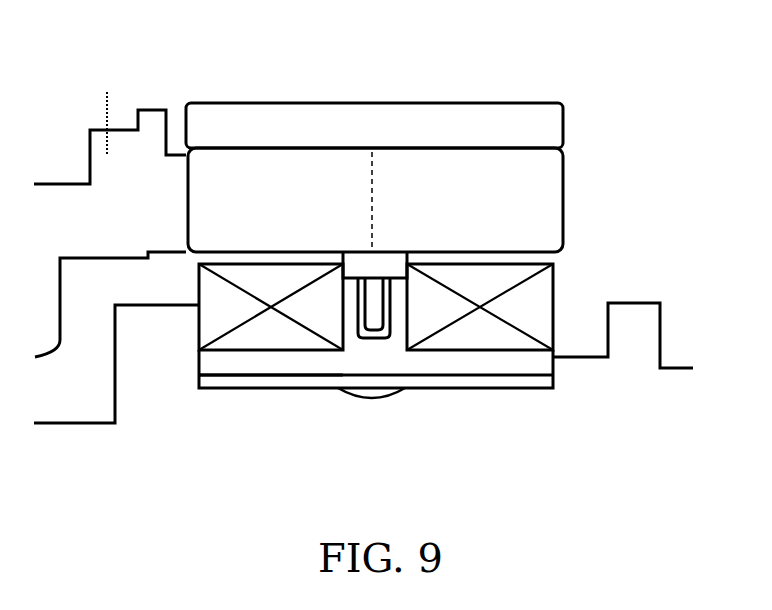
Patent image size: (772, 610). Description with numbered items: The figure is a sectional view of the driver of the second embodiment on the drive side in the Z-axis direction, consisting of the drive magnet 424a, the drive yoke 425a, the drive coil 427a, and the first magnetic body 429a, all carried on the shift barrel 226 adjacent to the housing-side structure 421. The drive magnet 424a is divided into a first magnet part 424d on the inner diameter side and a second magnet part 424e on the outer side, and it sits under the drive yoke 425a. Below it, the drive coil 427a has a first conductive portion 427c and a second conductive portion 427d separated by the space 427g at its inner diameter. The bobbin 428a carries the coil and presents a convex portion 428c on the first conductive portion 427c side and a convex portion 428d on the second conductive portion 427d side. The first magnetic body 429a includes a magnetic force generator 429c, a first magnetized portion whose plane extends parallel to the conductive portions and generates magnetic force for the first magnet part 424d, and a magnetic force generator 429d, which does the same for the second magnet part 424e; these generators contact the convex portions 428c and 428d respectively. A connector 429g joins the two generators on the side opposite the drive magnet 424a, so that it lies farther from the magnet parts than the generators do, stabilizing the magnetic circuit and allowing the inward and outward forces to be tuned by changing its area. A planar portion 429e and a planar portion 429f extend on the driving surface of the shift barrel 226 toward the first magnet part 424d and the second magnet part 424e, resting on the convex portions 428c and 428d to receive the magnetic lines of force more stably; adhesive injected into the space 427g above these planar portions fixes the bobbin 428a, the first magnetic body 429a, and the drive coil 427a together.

The shift barrel 226 is at (108, 102).
The housing 421 is at (650, 338).
The drive magnet 424a is at (423, 158).
The first magnet part 424d is at (238, 165).
The second magnet part 424e is at (560, 165).
The drive yoke 425a is at (538, 118).
The drive coil 427a is at (388, 349).
The first conductive portion 427c is at (208, 328).
The second conductive portion 427d is at (519, 338).
The space 427g is at (365, 255).
The bobbin 428a is at (376, 386).
The convex portion 428c is at (345, 298).
The convex portion 428d is at (402, 312).
The first magnetic body 429a is at (409, 240).
The magnetic force generator 429c is at (352, 308).
The magnetic force generator 429d is at (381, 300).
The planar portion 429e is at (353, 302).
The planar portion 429f is at (410, 278).
The connector 429g is at (364, 322).